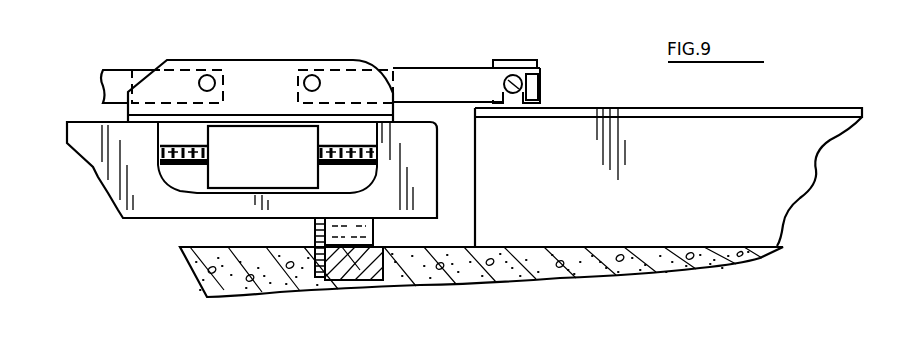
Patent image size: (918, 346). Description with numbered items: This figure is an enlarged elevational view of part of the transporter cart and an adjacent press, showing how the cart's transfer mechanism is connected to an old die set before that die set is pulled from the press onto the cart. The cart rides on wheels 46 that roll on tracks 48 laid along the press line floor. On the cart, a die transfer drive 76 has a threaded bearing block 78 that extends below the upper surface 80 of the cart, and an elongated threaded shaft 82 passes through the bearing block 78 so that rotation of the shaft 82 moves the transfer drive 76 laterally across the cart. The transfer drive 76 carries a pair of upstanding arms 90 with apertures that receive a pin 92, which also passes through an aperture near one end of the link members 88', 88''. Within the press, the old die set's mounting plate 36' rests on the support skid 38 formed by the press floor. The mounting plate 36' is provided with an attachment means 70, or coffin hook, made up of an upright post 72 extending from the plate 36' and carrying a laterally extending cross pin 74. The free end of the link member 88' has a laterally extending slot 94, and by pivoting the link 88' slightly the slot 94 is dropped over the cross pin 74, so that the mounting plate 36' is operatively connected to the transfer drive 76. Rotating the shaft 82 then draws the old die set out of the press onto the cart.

The mounting plate 36' is at (668, 95).
The support skid 38 is at (708, 188).
The wheel 46 is at (367, 223).
The track 48 is at (320, 265).
The attachment means 70 is at (500, 60).
The upright post 72 is at (520, 60).
The cross pin 74 is at (525, 83).
The die transfer drive 76 is at (282, 57).
The threaded bearing block 78 is at (268, 174).
The upper surface 80 is at (75, 122).
The threaded shaft 82 is at (330, 146).
The link member 88' is at (466, 69).
The link member 88'' is at (130, 68).
The upstanding arm 90 is at (253, 63).
The pin 92 is at (203, 76).
The slot 94 is at (517, 86).